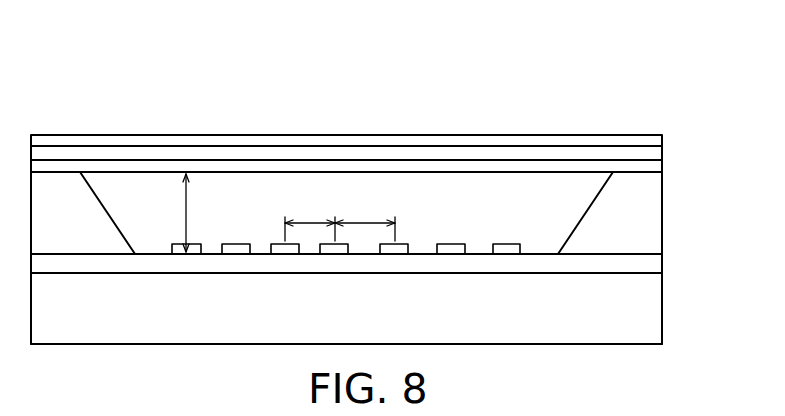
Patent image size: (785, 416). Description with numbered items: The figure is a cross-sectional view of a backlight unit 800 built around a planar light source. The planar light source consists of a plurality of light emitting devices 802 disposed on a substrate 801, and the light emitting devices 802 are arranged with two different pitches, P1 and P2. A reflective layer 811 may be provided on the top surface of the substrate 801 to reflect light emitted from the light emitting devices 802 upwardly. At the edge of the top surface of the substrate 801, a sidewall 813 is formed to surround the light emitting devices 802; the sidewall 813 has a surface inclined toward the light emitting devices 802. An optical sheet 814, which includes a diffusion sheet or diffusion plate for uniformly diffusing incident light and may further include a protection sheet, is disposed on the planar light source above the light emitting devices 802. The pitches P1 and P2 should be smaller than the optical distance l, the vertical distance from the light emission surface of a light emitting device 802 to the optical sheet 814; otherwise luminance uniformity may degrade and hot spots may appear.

The backlight unit 800 is at (540, 127).
The substrate 801 is at (654, 325).
The reflective layer 811 is at (654, 264).
The light emitting devices 802 is at (505, 244).
The sidewall 813 is at (657, 196).
The optical sheet 814 is at (668, 132).